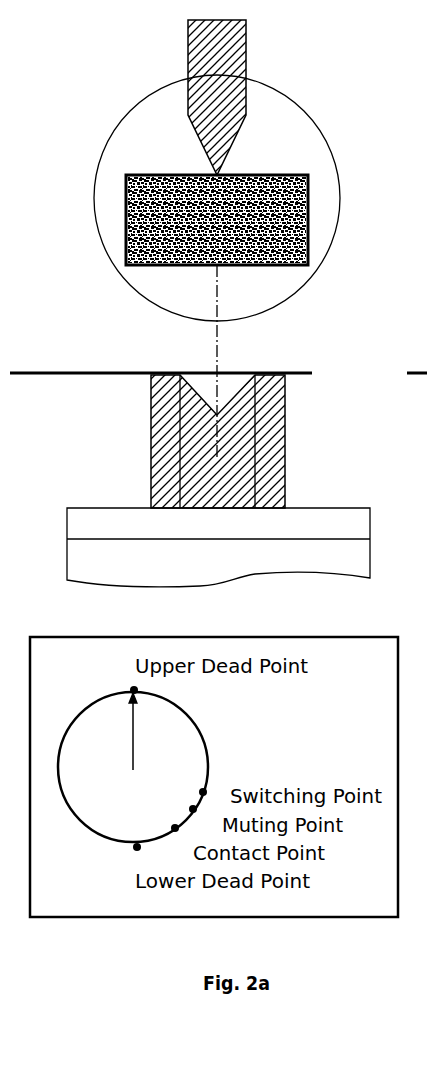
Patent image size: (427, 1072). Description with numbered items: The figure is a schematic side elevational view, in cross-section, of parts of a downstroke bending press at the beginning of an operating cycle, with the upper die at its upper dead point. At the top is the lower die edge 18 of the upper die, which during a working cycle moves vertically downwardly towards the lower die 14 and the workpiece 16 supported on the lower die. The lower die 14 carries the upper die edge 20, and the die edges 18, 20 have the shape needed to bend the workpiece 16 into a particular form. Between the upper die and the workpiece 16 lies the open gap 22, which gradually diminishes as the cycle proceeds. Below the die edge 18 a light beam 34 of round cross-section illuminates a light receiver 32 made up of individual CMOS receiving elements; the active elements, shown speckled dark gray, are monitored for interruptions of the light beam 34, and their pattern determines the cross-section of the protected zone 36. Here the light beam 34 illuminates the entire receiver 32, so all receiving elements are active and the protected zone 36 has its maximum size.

The lower die edge 18 is at (189, 48).
The light beam 34 is at (112, 125).
The protected zone 36 is at (145, 230).
The light receiver 32 is at (310, 218).
The open gap 22 is at (198, 340).
The workpiece 16 is at (95, 375).
The lower die 14 is at (105, 517).
The upper die edge 20 is at (273, 474).